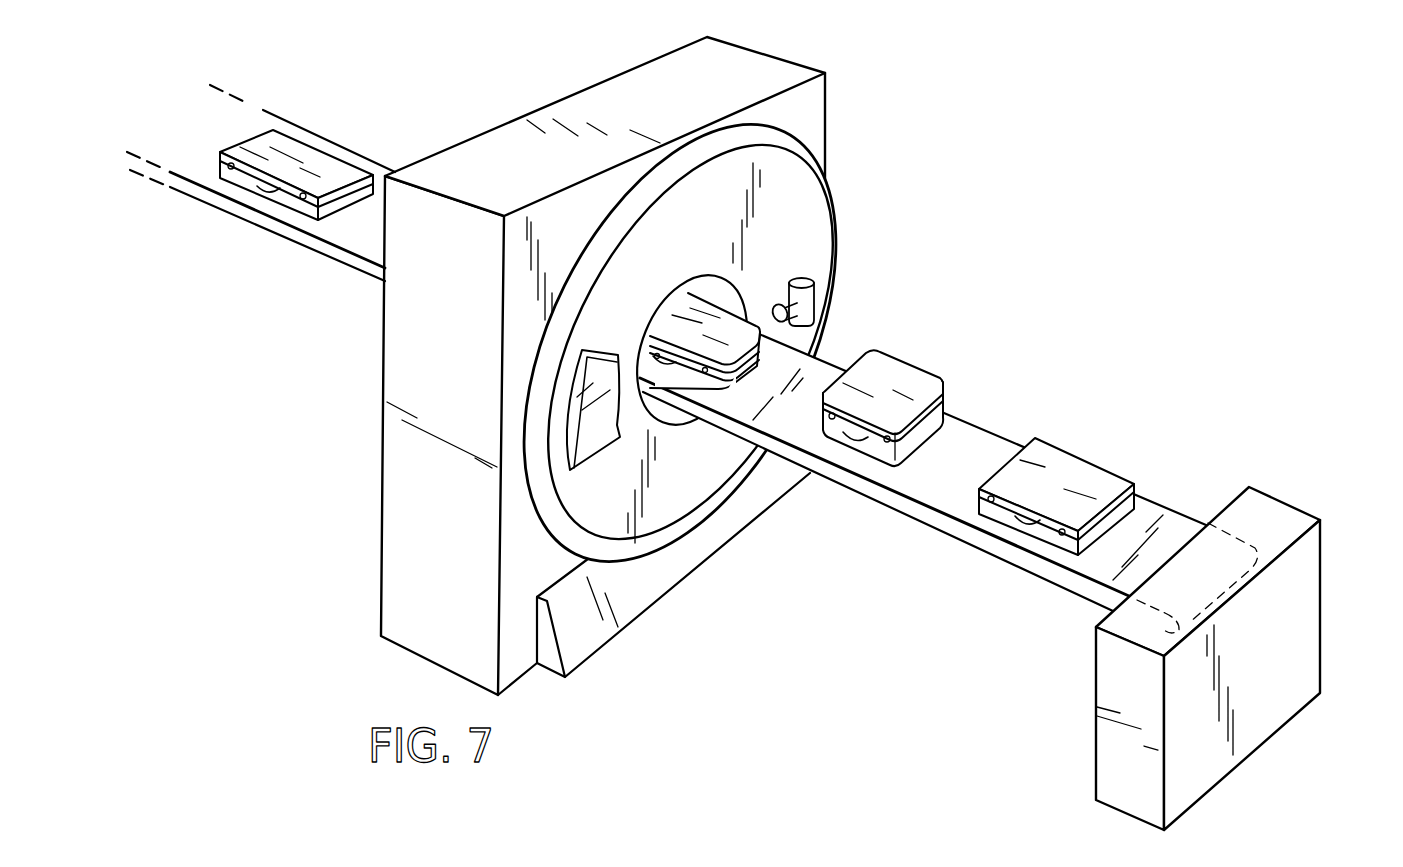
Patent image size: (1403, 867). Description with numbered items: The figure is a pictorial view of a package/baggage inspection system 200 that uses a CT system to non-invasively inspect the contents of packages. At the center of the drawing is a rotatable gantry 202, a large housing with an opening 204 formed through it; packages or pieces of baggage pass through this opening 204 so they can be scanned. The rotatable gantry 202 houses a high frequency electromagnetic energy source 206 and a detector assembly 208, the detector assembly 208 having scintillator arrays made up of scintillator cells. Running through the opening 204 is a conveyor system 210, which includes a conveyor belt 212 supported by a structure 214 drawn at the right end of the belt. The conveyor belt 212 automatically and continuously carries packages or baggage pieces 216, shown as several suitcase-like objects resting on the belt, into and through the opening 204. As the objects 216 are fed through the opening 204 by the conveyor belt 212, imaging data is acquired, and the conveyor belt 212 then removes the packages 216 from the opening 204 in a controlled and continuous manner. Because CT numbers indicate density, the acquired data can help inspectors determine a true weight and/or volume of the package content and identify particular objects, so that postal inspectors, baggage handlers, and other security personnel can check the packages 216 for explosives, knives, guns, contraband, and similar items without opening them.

The package/baggage inspection system 200 is at (1105, 232).
The rotatable gantry 202 is at (821, 217).
The opening 204 is at (720, 287).
The high frequency electromagnetic energy source 206 is at (814, 298).
The detector assembly 208 is at (590, 452).
The conveyor system 210 is at (120, 199).
The conveyor belt 212 is at (337, 233).
The structure 214 is at (1303, 621).
The packages or baggage pieces 216 is at (312, 155).